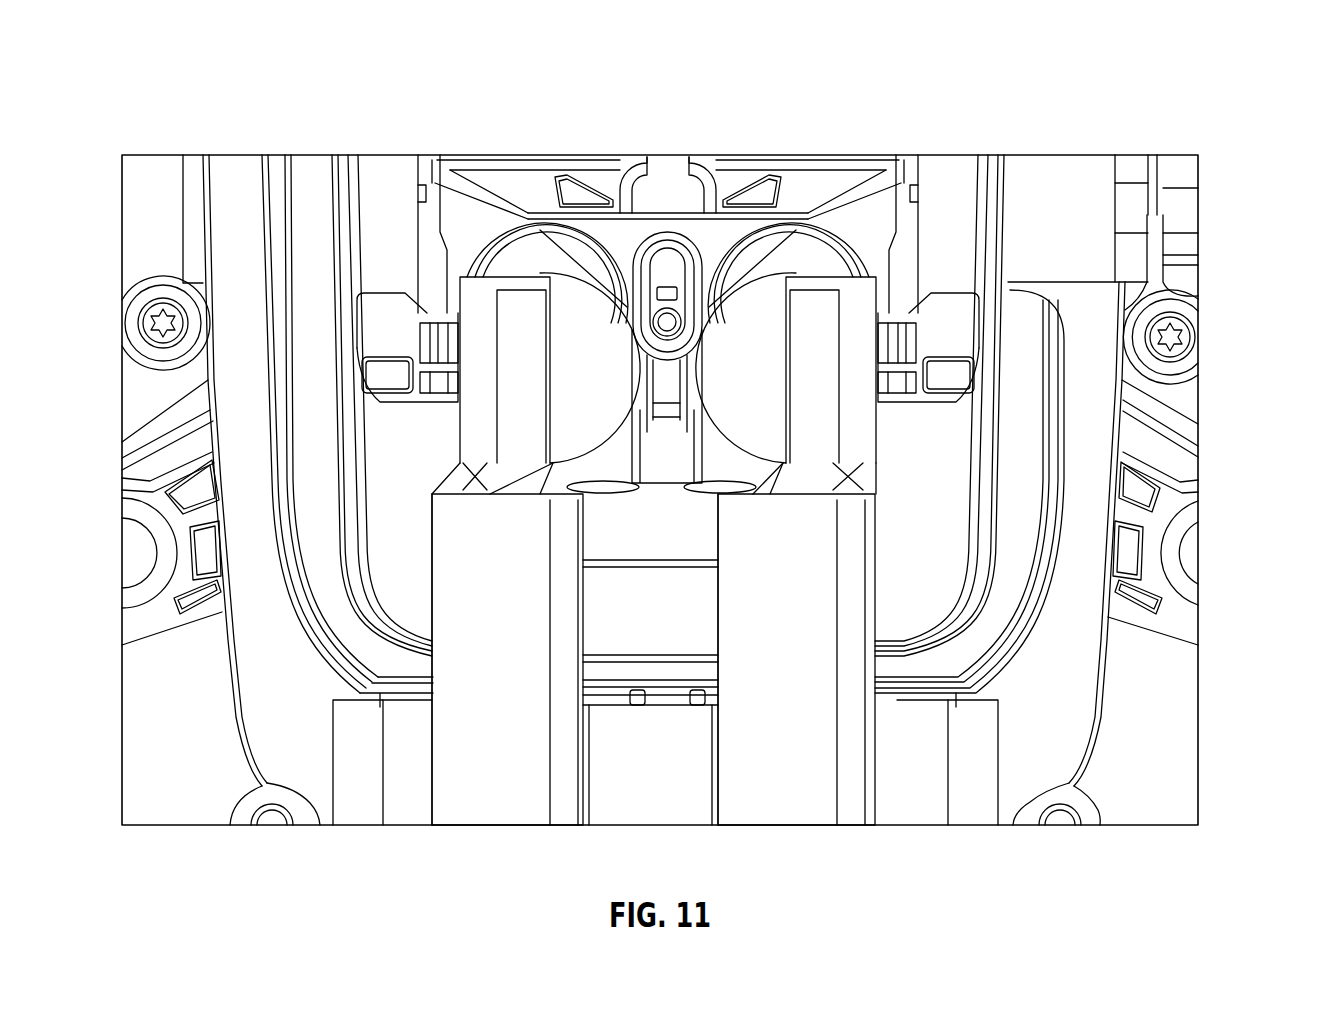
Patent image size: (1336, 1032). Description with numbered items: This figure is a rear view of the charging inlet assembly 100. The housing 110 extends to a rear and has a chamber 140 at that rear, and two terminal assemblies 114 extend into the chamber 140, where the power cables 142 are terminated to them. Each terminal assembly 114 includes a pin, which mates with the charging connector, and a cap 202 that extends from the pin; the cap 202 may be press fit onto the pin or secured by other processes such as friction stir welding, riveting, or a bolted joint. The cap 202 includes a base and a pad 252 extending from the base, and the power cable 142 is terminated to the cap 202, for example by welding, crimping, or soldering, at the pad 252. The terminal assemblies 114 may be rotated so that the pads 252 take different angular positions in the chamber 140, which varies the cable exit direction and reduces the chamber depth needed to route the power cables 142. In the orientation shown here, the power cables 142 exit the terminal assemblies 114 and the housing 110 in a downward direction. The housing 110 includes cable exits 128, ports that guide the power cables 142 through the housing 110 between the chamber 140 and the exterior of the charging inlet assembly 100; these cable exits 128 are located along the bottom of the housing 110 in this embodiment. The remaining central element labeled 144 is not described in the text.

The charging inlet assembly 100 is at (1085, 57).
The housing 110 is at (1062, 677).
The terminal assembly 114 is at (583, 312).
The cable exit 128 is at (427, 810).
The chamber 140 is at (932, 563).
The power cable 142 is at (502, 767).
The center bracket 144 is at (667, 228).
The cap 202 is at (468, 310).
The pad 252 is at (858, 358).